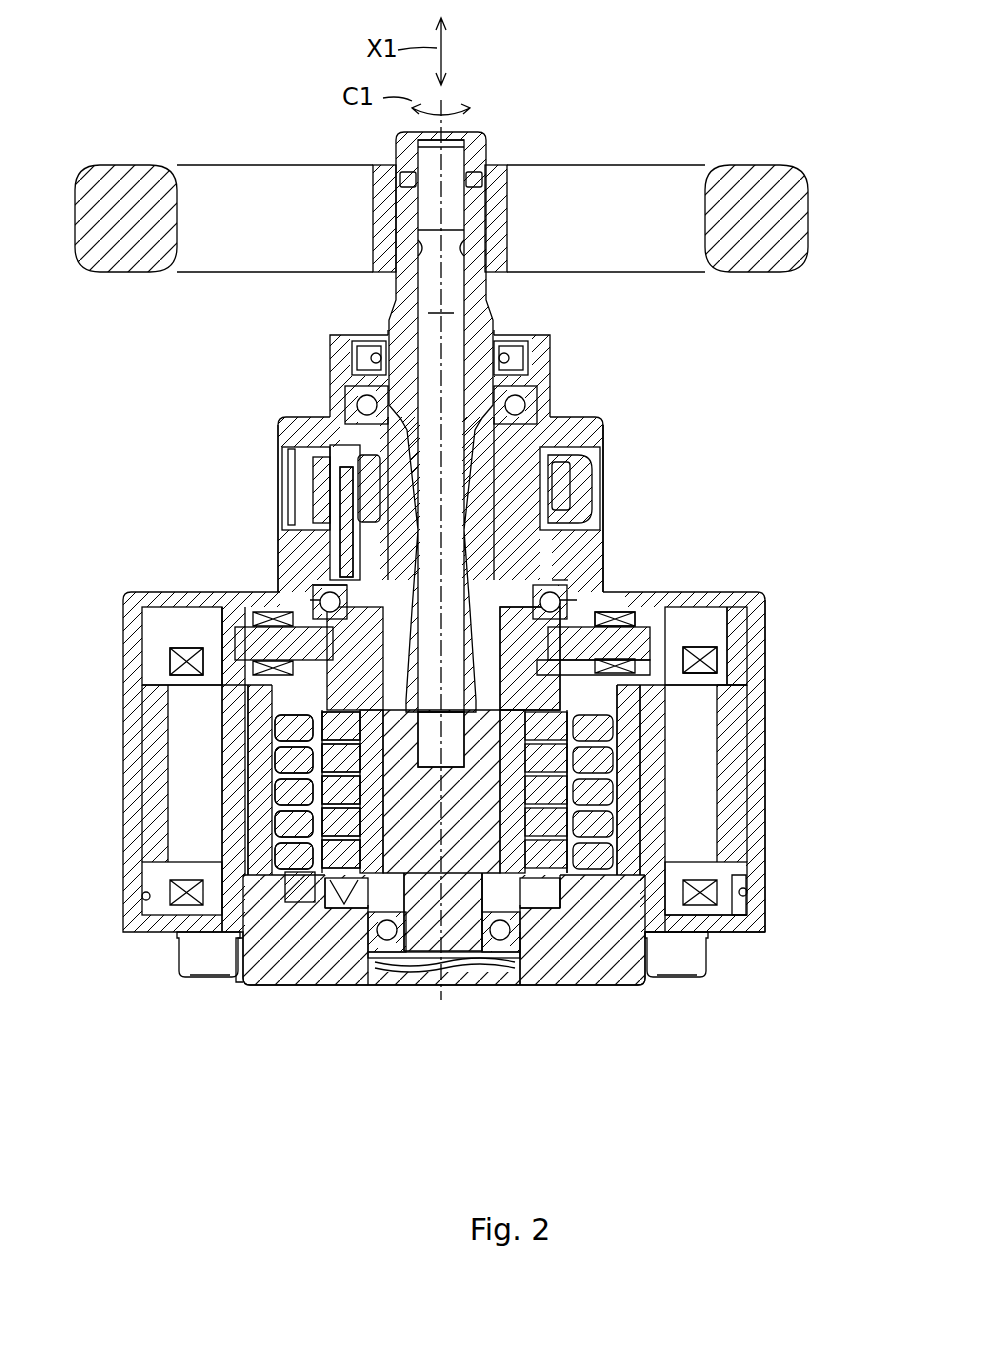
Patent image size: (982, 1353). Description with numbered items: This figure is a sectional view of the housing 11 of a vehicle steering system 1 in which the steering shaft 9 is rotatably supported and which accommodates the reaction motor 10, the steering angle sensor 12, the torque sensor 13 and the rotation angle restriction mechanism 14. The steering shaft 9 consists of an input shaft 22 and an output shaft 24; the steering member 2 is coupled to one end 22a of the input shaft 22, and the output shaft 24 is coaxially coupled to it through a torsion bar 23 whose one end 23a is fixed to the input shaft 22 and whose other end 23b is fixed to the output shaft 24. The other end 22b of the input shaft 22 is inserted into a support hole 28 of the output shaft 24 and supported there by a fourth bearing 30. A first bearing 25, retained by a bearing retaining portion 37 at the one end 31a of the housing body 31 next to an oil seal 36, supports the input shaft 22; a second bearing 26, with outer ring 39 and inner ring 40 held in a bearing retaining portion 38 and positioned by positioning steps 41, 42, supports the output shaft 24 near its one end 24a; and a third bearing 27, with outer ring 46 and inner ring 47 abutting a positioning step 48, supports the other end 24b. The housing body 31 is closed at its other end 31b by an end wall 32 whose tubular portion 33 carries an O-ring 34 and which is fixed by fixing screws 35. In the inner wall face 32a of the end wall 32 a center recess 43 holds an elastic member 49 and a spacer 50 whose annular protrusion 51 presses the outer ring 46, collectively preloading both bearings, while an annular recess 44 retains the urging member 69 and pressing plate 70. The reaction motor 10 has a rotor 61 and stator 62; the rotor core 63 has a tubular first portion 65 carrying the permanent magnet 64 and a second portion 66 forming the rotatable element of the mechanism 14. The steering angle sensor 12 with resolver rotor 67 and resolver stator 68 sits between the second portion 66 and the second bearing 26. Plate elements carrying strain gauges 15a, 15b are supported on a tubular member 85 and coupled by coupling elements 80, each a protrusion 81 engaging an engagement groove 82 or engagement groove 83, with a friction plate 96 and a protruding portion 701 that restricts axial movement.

The rotary actuator 1 is at (492, 121).
The steering member 2 is at (750, 163).
The steering shaft 9 is at (502, 305).
The reaction motor 10 is at (761, 823).
The housing 11 is at (614, 477).
The steering angle sensor 12 is at (662, 641).
The torque sensor 13 is at (614, 447).
The rotation angle restriction mechanism 14 is at (631, 837).
The strain gauge 15a is at (672, 718).
The strain gauge 15b is at (791, 769).
The input shaft 22 is at (386, 294).
The one end of the input shaft 22a is at (392, 150).
The other end of the input shaft 22b is at (537, 566).
The torsion bar 23 is at (477, 387).
The one end of the torsion bar 23a is at (458, 162).
The other end of the torsion bar 23b is at (455, 751).
The output shaft 24 is at (290, 892).
The one end of the output shaft 24a is at (563, 568).
The other end of the output shaft 24b is at (456, 940).
The first bearing 25 is at (528, 400).
The second bearing 26 is at (566, 578).
The third bearing 27 is at (492, 985).
The support hole 28 is at (662, 672).
The fourth bearing 30 is at (702, 693).
The housing body 31 is at (777, 738).
The one end of the housing body 31a is at (549, 347).
The other end of the housing body 31b is at (758, 860).
The end wall 32 is at (639, 998).
The inner wall face 32a is at (256, 941).
The tubular portion 33 is at (745, 887).
The O-ring 34 is at (749, 893).
The fixing screw 35 is at (192, 962).
The oil seal 36 is at (372, 356).
The bearing retaining portion 37 is at (362, 401).
The bearing retaining portion 38 is at (327, 588).
The outer ring 39 is at (312, 606).
The inner ring 40 is at (313, 575).
The positioning step 41 is at (578, 597).
The positioning step 42 is at (563, 595).
The center recess 43 is at (380, 916).
The annular recess 44 is at (504, 952).
The outer ring 46 is at (388, 962).
The inner ring 47 is at (378, 952).
The positioning step 48 is at (477, 914).
The elastic member 49 is at (487, 953).
The spacer 50 is at (441, 978).
The annular protrusion 51 is at (372, 900).
The rotor 61 is at (677, 760).
The stator 62 is at (735, 803).
The rotor core 63 is at (235, 806).
The permanent magnet 64 is at (227, 711).
The first portion 65 is at (260, 838).
The second portion 66 is at (290, 695).
The resolver rotor 67 is at (634, 600).
The resolver stator 68 is at (667, 653).
The urging member 69 is at (540, 955).
The pressing plate 70 is at (530, 962).
The coupling element 80 is at (77, 708).
The protrusion 81 is at (297, 743).
The engagement groove 82 is at (291, 763).
The engagement groove 83 is at (299, 900).
The tubular member 85 is at (313, 657).
The friction plate 96 is at (346, 888).
The protruding portion 701 is at (577, 957).